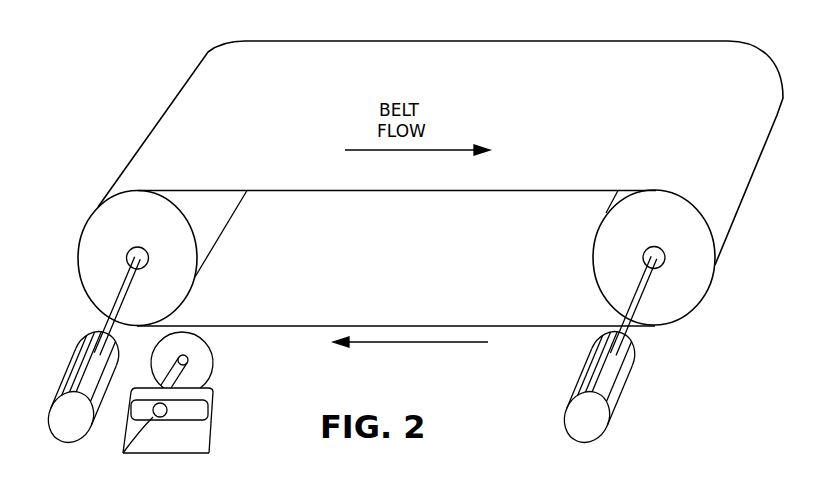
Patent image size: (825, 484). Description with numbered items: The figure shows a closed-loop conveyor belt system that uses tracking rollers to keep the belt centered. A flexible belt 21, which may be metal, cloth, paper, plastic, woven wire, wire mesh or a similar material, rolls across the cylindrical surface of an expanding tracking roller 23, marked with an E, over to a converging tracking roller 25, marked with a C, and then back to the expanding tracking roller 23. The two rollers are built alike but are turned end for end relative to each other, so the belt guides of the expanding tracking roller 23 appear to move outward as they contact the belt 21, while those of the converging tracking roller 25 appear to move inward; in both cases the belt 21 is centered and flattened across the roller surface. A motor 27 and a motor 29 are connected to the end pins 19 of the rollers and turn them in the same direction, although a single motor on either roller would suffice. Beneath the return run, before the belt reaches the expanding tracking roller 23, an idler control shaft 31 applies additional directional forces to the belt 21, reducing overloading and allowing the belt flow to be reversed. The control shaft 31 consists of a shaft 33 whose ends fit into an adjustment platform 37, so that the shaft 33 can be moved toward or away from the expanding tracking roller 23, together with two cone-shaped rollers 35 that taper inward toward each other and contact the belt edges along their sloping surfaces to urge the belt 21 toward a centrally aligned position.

The end pins 19 is at (126, 262).
The belt 21 is at (750, 120).
The expanding tracking roller 23 is at (100, 296).
The converging tracking roller 25 is at (706, 282).
The motor 27 is at (62, 423).
The motor 29 is at (618, 394).
The idler control shaft 31 is at (172, 398).
The shaft 33 is at (125, 454).
The cone-shaped rollers 35 is at (220, 327).
The adjustment platform 37 is at (213, 435).